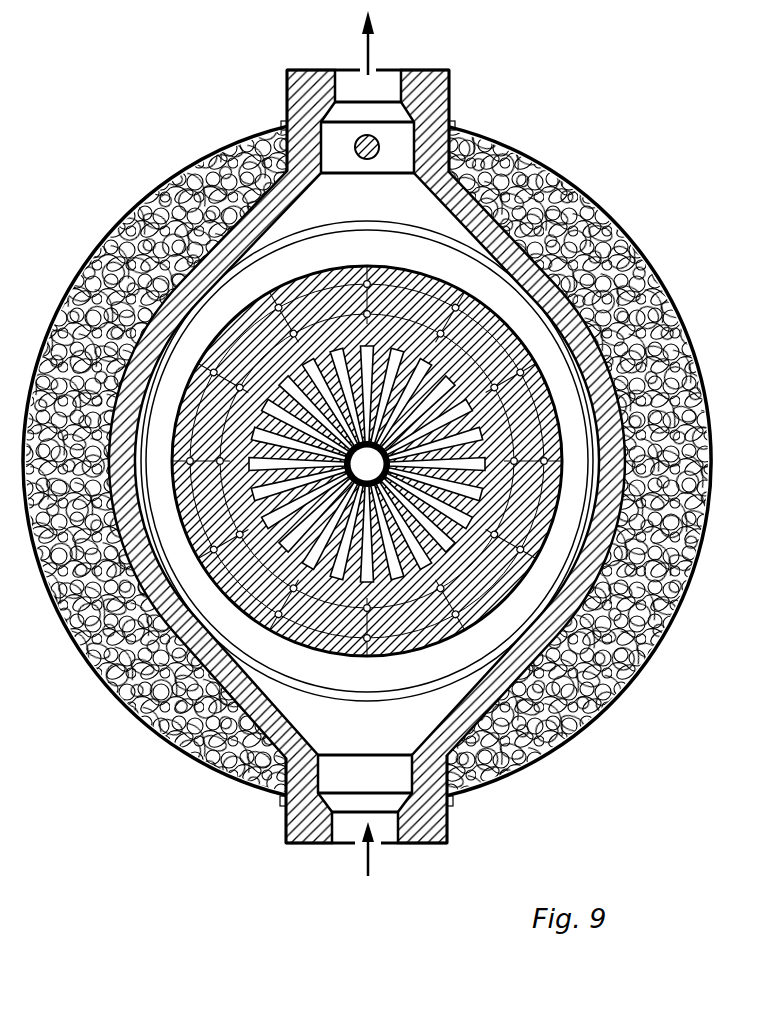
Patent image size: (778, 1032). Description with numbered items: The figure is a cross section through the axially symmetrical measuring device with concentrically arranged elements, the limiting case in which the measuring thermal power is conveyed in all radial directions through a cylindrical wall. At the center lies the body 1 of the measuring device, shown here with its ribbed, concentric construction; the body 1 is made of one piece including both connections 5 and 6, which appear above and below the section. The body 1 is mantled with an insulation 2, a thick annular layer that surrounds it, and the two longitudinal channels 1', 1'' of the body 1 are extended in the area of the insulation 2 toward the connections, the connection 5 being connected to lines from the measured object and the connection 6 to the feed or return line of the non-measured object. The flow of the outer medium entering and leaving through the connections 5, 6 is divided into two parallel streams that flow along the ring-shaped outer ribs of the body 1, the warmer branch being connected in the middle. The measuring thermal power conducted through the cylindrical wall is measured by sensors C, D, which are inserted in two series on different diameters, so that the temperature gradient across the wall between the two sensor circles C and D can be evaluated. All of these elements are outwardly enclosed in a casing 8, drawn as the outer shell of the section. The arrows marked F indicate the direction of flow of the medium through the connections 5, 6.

The body of the measuring device 1 is at (396, 514).
The longitudinal channel 1' is at (429, 786).
The longitudinal channel 1'' is at (367, 388).
The insulation 2 is at (558, 205).
The connection 5 is at (297, 832).
The connection 6 is at (310, 87).
The casing 8 is at (530, 168).
The sensor C is at (446, 336).
The sensor D is at (462, 307).
The pipe F is at (365, 147).